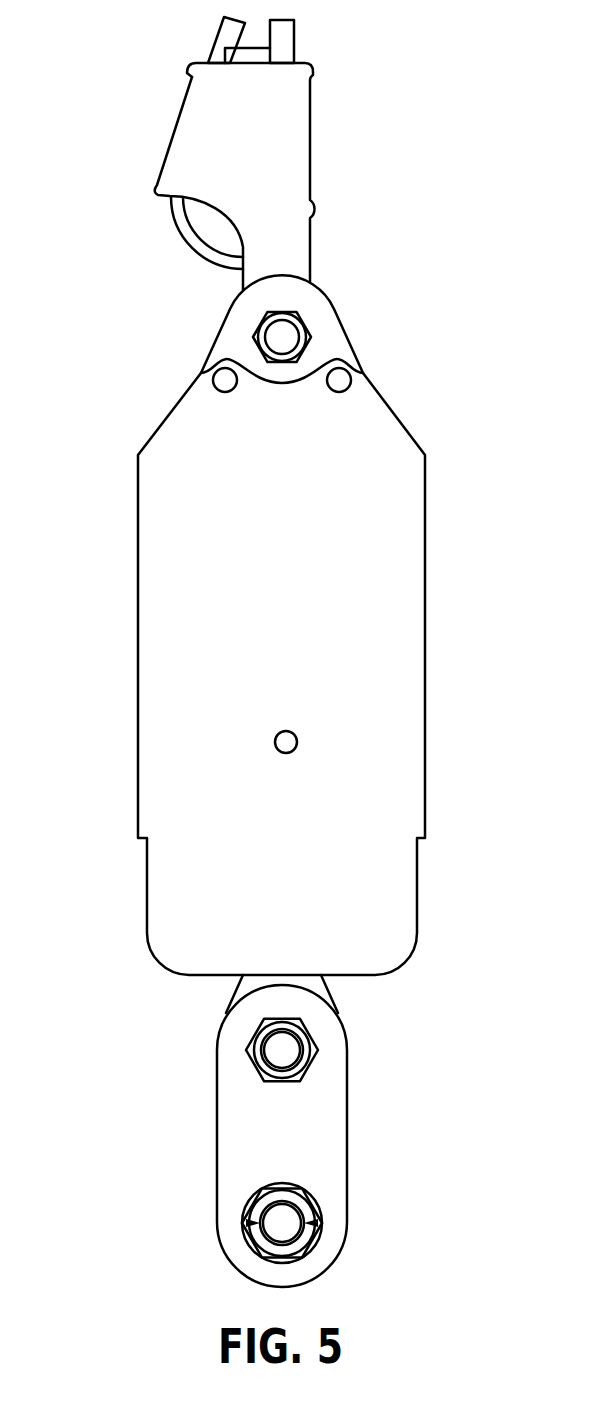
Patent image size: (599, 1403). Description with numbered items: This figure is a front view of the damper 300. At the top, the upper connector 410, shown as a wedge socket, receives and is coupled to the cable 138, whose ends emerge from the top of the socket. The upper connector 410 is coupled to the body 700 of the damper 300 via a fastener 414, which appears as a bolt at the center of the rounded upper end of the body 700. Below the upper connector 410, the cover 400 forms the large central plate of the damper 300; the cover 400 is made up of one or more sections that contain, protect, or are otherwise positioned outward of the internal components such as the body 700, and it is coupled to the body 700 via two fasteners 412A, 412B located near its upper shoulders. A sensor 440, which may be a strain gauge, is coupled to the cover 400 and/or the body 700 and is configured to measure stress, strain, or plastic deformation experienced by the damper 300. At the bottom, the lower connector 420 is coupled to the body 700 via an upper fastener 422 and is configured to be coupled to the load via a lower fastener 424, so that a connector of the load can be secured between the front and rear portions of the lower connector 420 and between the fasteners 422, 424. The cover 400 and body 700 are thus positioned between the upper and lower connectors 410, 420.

The cable 138 is at (293, 43).
The damper 300 is at (93, 232).
The upper connector 410 is at (310, 132).
The body 700 is at (222, 322).
The fastener 414 is at (313, 338).
The fastener 412A is at (226, 393).
The fastener 412B is at (340, 393).
The cover 400 is at (438, 521).
The sensor 440 is at (294, 734).
The lower connector 420 is at (347, 1135).
The fastener 422 is at (322, 1048).
The fastener 424 is at (322, 1221).